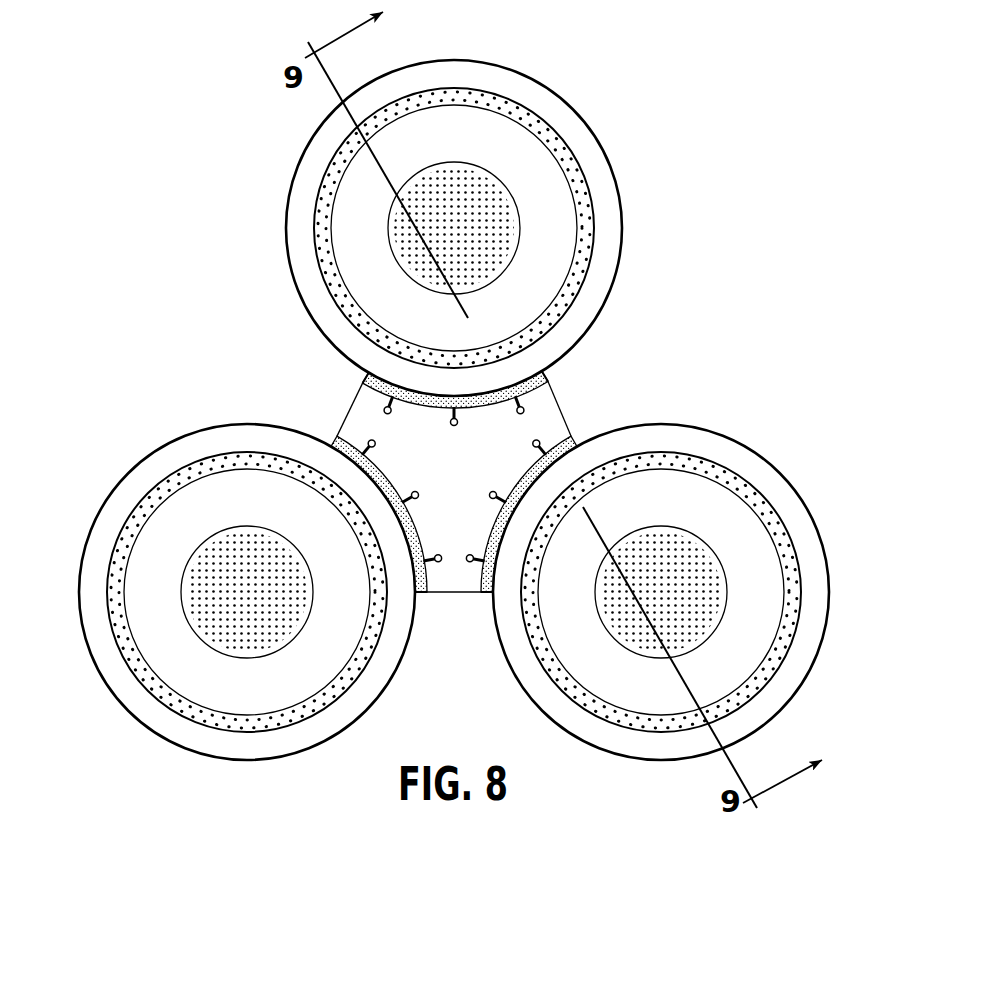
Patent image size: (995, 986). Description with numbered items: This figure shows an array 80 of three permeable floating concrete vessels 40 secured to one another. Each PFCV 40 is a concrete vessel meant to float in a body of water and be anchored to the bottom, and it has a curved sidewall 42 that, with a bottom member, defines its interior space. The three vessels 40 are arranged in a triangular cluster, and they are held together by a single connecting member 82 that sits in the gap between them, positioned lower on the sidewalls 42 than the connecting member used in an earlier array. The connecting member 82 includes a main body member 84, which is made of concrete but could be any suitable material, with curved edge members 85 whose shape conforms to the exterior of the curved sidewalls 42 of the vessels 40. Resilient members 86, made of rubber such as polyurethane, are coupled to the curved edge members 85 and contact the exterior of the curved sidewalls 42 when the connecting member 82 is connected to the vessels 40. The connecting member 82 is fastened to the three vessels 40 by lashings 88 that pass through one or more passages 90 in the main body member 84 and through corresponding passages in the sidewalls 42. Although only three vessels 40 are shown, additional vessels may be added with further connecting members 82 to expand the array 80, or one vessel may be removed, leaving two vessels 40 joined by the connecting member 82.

The permeable floating concrete vessel 40 is at (553, 88).
The curved sidewall 42 is at (622, 229).
The array 80 is at (680, 83).
The connecting member 82 is at (488, 521).
The main body member 84 is at (558, 417).
The curved edge members 85 is at (547, 472).
The resilient members 86 is at (365, 381).
The lashings 88 is at (480, 561).
The passages 90 is at (385, 406).